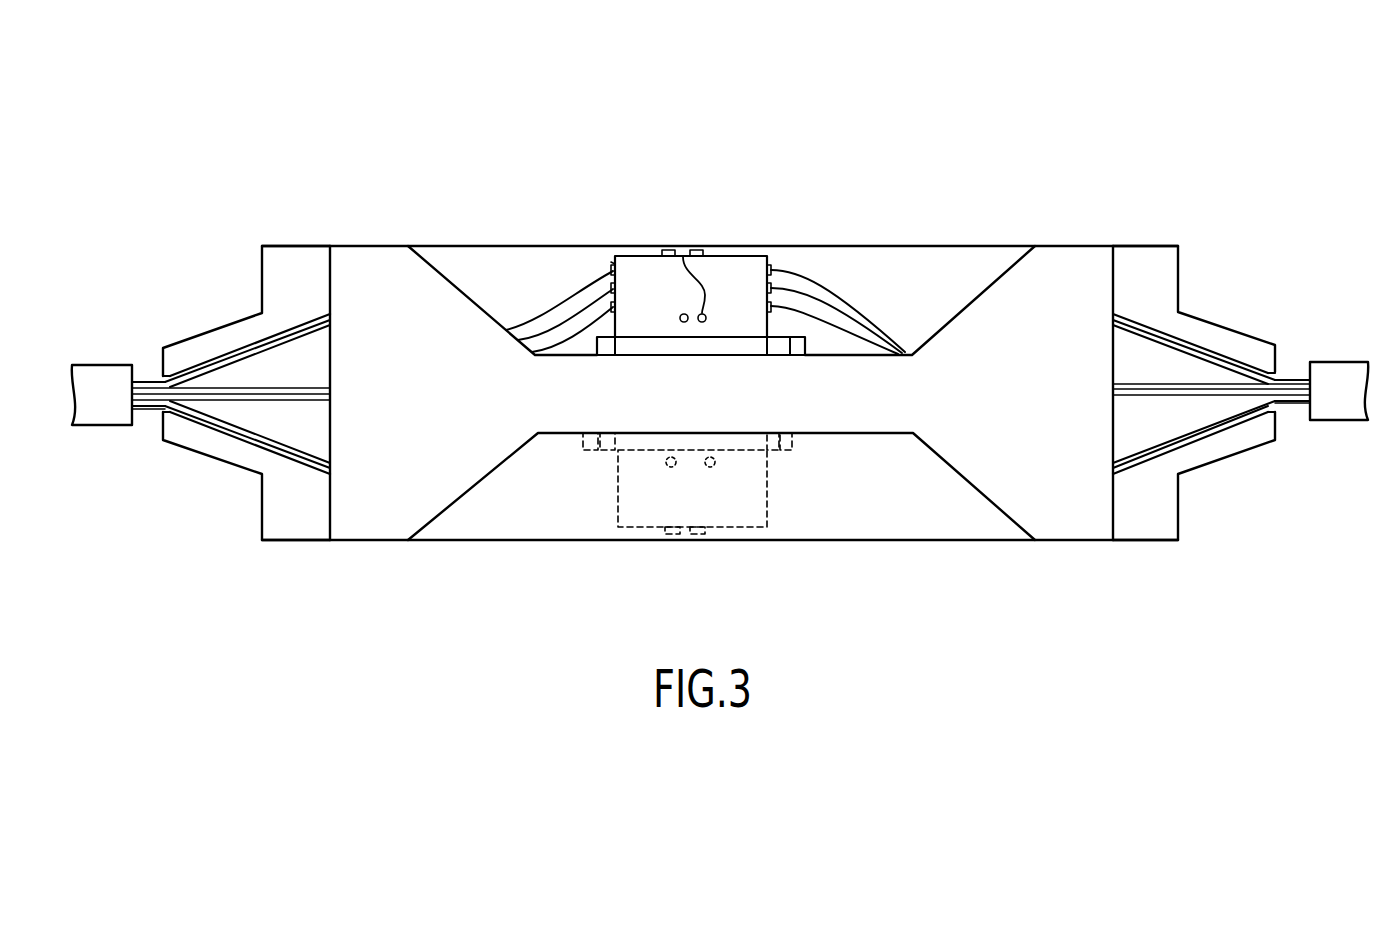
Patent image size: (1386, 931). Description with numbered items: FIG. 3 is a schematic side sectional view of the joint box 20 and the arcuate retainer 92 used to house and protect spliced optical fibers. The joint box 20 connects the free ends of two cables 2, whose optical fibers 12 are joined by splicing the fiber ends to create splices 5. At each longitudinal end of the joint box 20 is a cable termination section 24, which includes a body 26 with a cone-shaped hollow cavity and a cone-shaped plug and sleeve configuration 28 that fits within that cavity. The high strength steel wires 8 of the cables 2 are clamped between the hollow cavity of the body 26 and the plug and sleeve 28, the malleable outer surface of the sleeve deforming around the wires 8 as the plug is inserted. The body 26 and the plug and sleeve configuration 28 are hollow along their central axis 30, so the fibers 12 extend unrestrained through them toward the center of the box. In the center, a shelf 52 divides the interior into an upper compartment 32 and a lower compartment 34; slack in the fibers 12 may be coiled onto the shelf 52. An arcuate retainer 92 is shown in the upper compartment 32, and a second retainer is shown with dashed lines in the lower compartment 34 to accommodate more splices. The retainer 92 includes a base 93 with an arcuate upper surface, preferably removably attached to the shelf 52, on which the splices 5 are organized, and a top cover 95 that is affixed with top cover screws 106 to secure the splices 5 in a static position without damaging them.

The cable 2 is at (93, 428).
The splice 5 is at (610, 260).
The high strength steel wire 8 is at (146, 410).
The optical fiber 12 is at (148, 378).
The joint box 20 is at (1120, 128).
The cable termination section 24 is at (280, 255).
The body 26 is at (268, 522).
The plug and sleeve configuration 28 is at (245, 372).
The central axis 30 is at (263, 388).
The upper compartment 32 is at (445, 258).
The lower compartment 34 is at (937, 527).
The shelf 52 is at (878, 392).
The arcuate retainer 92 is at (742, 248).
The base 93 is at (723, 346).
The top cover 95 is at (643, 270).
The top cover screw 106 is at (683, 257).